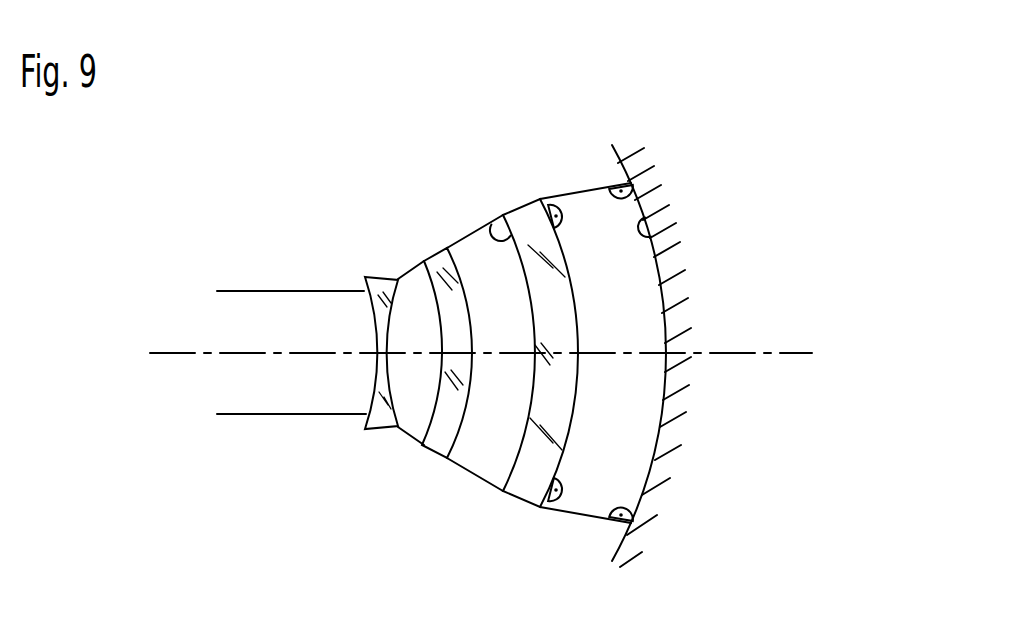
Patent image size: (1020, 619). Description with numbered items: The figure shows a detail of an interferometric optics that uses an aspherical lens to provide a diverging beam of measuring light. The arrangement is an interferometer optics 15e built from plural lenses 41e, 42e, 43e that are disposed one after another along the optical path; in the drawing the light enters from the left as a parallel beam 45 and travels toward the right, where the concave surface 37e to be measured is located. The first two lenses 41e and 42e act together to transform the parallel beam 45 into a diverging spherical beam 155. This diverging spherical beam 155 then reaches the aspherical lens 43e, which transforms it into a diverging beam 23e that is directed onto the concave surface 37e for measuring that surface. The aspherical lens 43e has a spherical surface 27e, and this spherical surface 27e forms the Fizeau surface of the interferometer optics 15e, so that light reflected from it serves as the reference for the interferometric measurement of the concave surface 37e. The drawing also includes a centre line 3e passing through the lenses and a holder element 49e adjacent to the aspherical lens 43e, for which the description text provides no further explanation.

The optical axis 3e is at (778, 354).
The interferometer optics 15e is at (399, 167).
The diverging beam 23e is at (583, 190).
The spherical surface 27e is at (570, 480).
The concave surface 37e is at (651, 237).
The lens 41e is at (373, 430).
The lens 42e is at (433, 453).
The aspherical lens 43e is at (515, 500).
The parallel beam 45 is at (275, 414).
The holder element 49e is at (492, 222).
The diverging spherical beam 155 is at (475, 468).